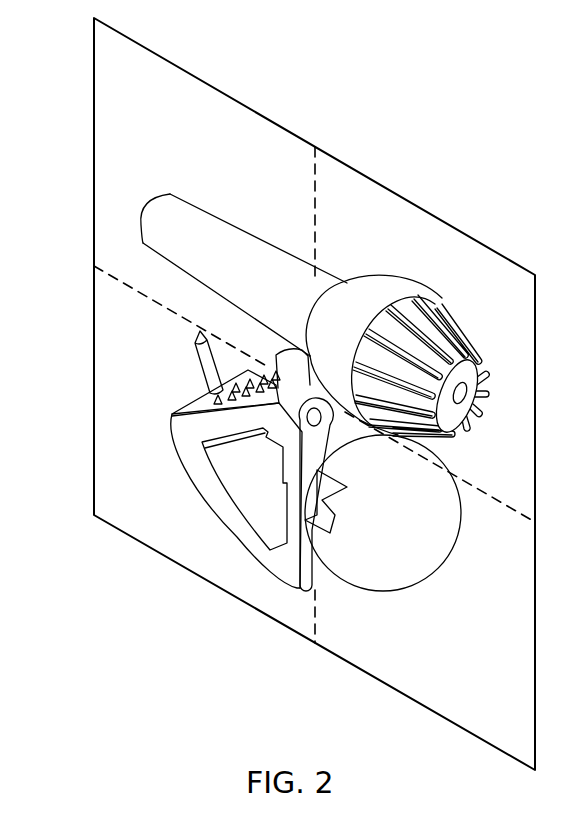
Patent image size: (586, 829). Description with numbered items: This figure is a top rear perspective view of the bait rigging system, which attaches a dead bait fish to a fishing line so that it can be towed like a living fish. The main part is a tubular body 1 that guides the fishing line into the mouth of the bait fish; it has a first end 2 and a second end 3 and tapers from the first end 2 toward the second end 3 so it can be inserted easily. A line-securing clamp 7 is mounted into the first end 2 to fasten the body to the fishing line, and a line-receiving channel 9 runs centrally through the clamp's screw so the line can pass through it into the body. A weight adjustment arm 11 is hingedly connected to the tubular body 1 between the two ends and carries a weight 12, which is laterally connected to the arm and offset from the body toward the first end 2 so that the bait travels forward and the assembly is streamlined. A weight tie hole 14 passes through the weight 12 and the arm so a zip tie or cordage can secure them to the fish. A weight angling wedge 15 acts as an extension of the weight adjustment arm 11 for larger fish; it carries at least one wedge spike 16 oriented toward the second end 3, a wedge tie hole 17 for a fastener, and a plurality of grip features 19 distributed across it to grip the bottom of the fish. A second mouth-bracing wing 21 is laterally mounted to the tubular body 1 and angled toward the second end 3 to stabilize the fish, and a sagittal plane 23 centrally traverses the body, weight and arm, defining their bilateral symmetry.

The tubular body 1 is at (238, 232).
The first end 2 is at (413, 298).
The second end 3 is at (160, 198).
The line-securing clamp 7 is at (458, 330).
The line-receiving channel 9 is at (458, 393).
The weight adjustment arm 11 is at (338, 445).
The weight 12 is at (432, 572).
The weight tie hole 14 is at (325, 517).
The weight angling wedge 15 is at (183, 447).
The wedge spike 16 is at (200, 366).
The wedge tie hole 17 is at (237, 497).
The plurality of grip features 19 is at (232, 410).
The second mouth-bracing wing 21 is at (280, 355).
The sagittal plane 23 is at (93, 145).